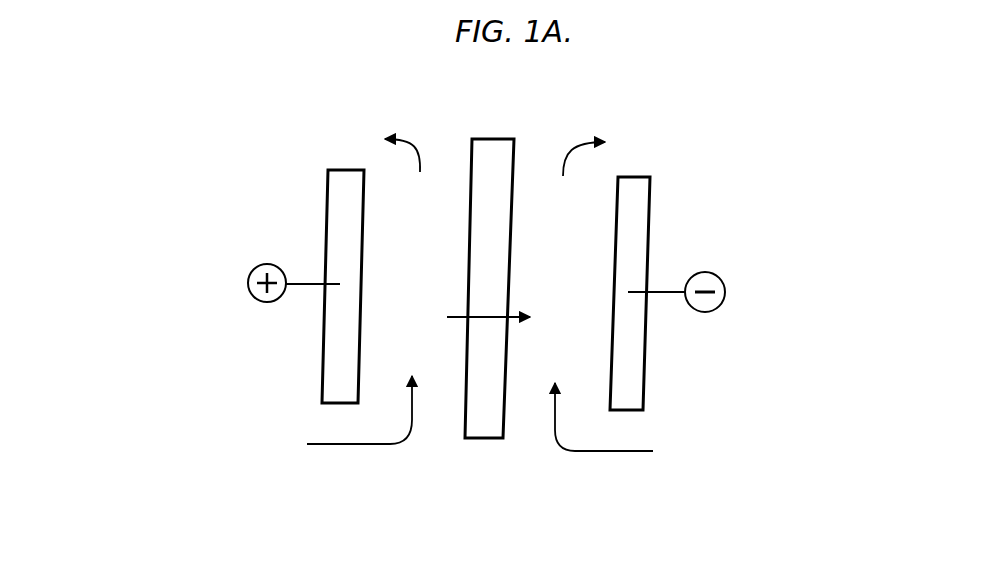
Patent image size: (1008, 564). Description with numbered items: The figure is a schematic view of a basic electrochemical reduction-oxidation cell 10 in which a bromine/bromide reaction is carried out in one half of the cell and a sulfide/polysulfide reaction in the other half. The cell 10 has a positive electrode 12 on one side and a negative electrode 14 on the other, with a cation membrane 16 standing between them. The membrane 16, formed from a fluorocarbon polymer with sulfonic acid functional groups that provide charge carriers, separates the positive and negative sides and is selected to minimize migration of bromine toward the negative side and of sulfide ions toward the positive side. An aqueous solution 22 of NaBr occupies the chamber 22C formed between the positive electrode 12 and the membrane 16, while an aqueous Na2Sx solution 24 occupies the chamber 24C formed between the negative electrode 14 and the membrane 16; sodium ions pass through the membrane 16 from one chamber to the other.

The cell 10 is at (410, 96).
The positive electrode 12 is at (335, 188).
The negative electrode 14 is at (638, 189).
The cation membrane 16 is at (495, 146).
The aqueous solution of NaBr 22 is at (242, 430).
The aqueous Na2Sx solution 24 is at (708, 427).
The chamber 22C is at (409, 259).
The chamber 24C is at (554, 259).